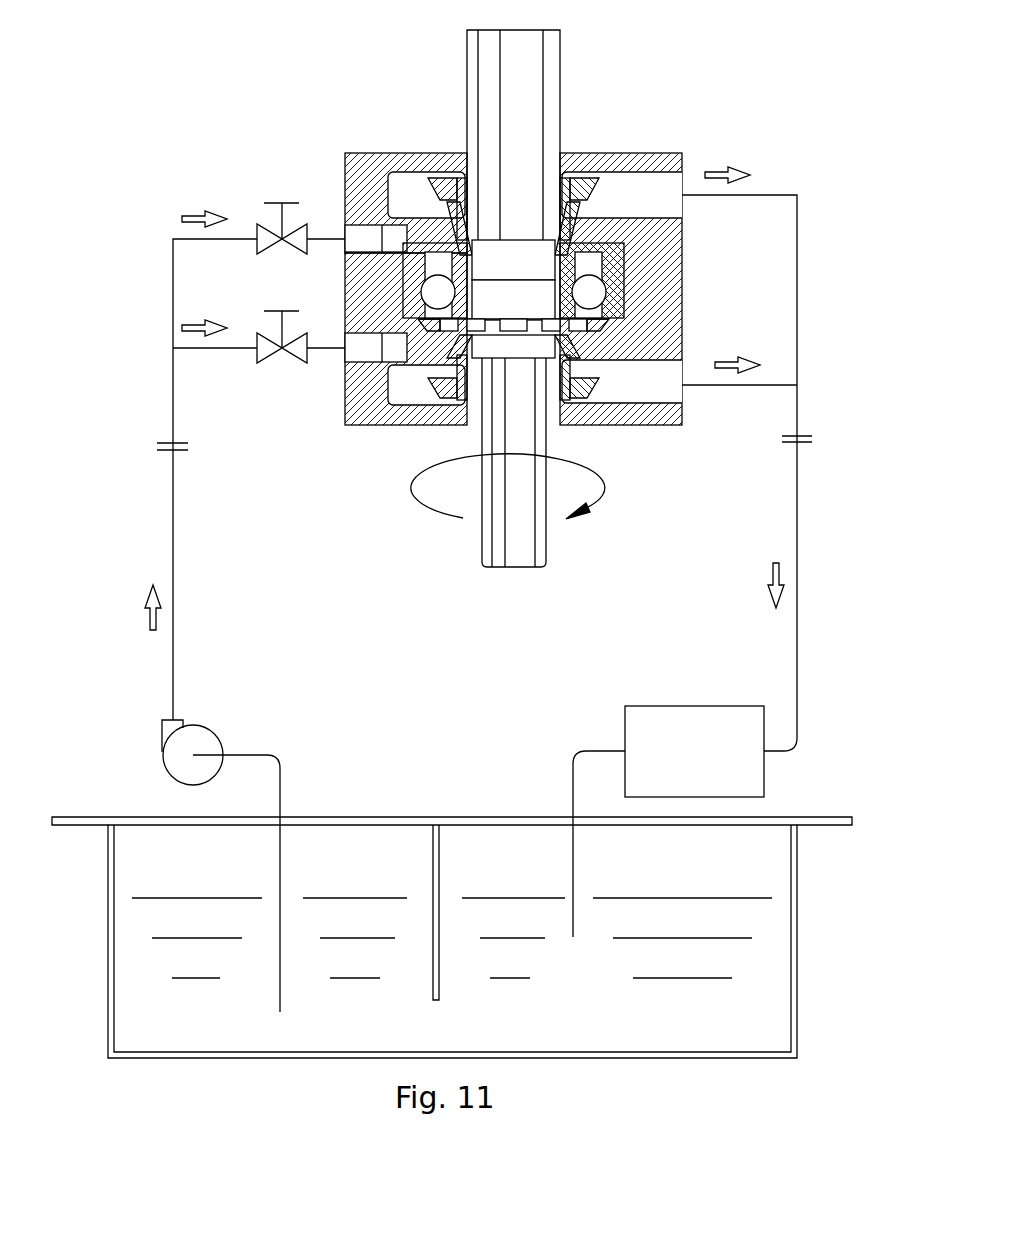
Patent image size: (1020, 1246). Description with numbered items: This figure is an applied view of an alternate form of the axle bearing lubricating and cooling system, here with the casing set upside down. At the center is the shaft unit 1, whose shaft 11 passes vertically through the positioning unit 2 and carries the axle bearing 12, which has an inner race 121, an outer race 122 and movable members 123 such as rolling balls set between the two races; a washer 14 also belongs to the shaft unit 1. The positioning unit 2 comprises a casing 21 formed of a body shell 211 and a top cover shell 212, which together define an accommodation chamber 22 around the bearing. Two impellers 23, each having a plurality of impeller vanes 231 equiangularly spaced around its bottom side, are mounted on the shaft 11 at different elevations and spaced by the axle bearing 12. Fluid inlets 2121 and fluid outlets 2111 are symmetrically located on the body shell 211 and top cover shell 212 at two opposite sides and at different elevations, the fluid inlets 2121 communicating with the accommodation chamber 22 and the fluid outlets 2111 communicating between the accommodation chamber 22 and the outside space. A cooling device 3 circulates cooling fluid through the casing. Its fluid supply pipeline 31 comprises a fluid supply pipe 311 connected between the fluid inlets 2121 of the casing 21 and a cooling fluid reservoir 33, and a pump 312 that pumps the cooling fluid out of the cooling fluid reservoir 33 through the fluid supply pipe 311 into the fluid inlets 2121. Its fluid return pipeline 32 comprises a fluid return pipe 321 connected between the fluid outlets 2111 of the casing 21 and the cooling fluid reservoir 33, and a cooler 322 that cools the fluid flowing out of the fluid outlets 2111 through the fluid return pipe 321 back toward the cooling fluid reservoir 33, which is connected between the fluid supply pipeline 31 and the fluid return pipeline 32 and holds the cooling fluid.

The shaft unit 1 is at (504, 298).
The shaft 11 is at (553, 78).
The axle bearing 12 is at (504, 328).
The inner race 121 is at (472, 292).
The outer race 122 is at (398, 357).
The movable members 123 is at (470, 254).
The washer 14 is at (640, 335).
The positioning unit 2 is at (514, 279).
The casing 21 is at (688, 283).
The body shell 211 is at (347, 302).
The fluid outlet 2111 is at (670, 187).
The top cover shell 212 is at (362, 183).
The fluid inlet 2121 is at (350, 235).
The accommodation chamber 22 is at (600, 278).
The impeller 23 is at (444, 279).
The impeller vanes 231 is at (435, 200).
The cooling device 3 is at (467, 612).
The fluid supply pipeline 31 is at (217, 611).
The fluid supply pipe 311 is at (175, 505).
The pump 312 is at (193, 742).
The fluid return pipeline 32 is at (726, 552).
The fluid return pipe 321 is at (797, 500).
The cooler 322 is at (683, 710).
The cooling fluid reservoir 33 is at (793, 898).